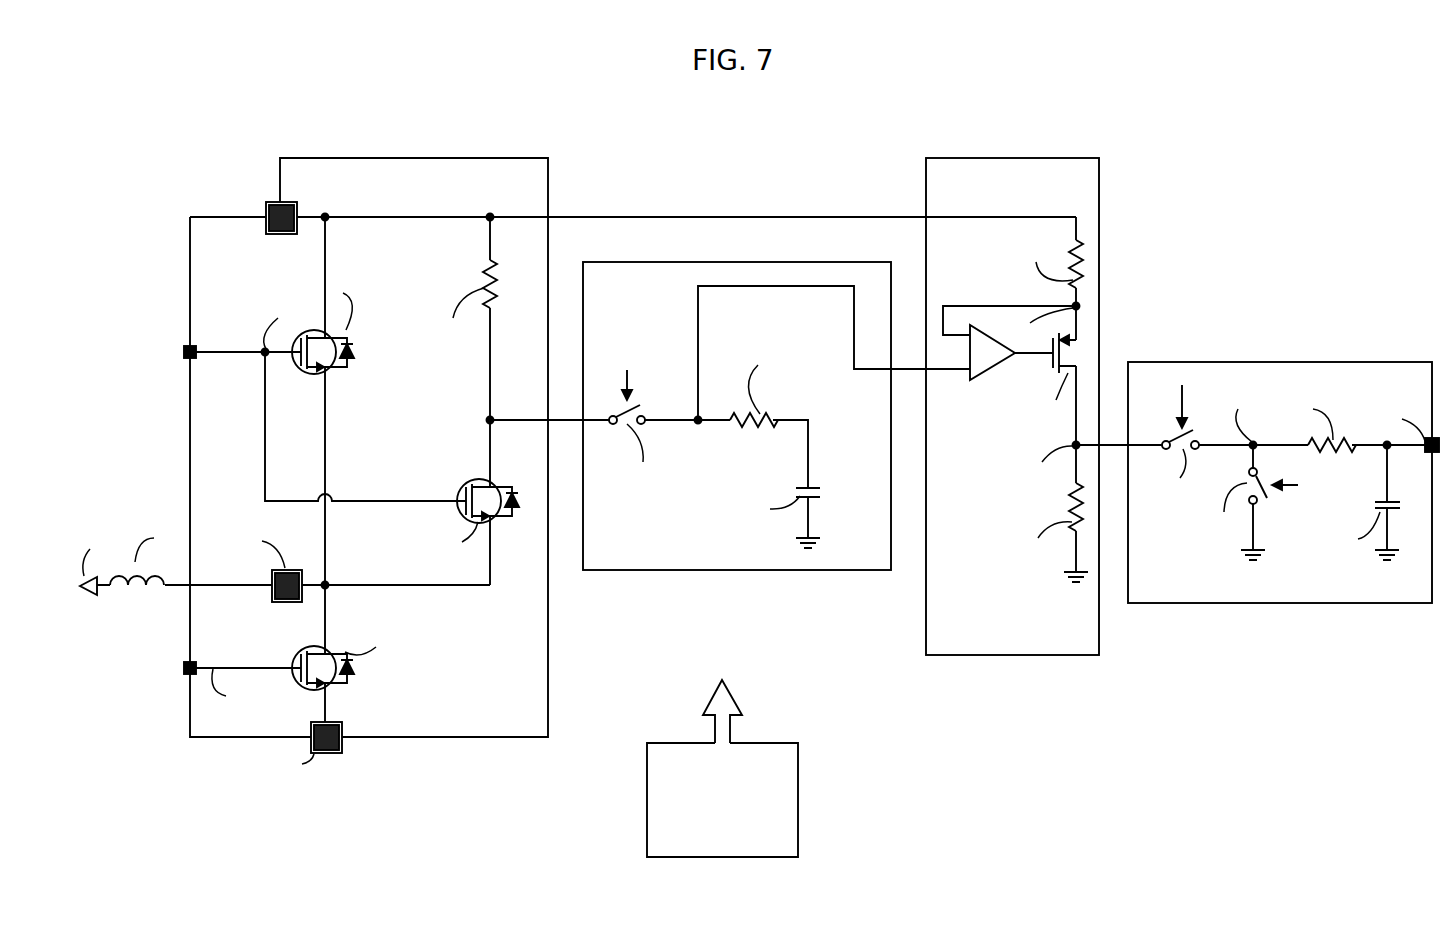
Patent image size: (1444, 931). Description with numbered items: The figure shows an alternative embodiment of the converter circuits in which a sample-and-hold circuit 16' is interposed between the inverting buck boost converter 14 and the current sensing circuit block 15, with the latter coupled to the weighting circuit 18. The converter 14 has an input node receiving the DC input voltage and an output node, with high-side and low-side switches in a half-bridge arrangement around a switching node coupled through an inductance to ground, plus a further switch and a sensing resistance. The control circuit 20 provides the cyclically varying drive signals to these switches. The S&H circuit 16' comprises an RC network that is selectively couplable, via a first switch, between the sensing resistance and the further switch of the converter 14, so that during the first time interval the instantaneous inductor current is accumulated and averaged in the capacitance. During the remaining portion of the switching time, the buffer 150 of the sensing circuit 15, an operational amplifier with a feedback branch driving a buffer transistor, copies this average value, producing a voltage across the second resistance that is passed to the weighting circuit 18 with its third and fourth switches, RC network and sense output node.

The inverting buck boost converter 14 is at (390, 157).
The current sensing circuit block 15 is at (1011, 157).
The S&H circuit 16' is at (730, 440).
The weighting circuit 18 is at (1275, 372).
The control circuit 20 is at (780, 812).
The buffer 150 is at (988, 367).